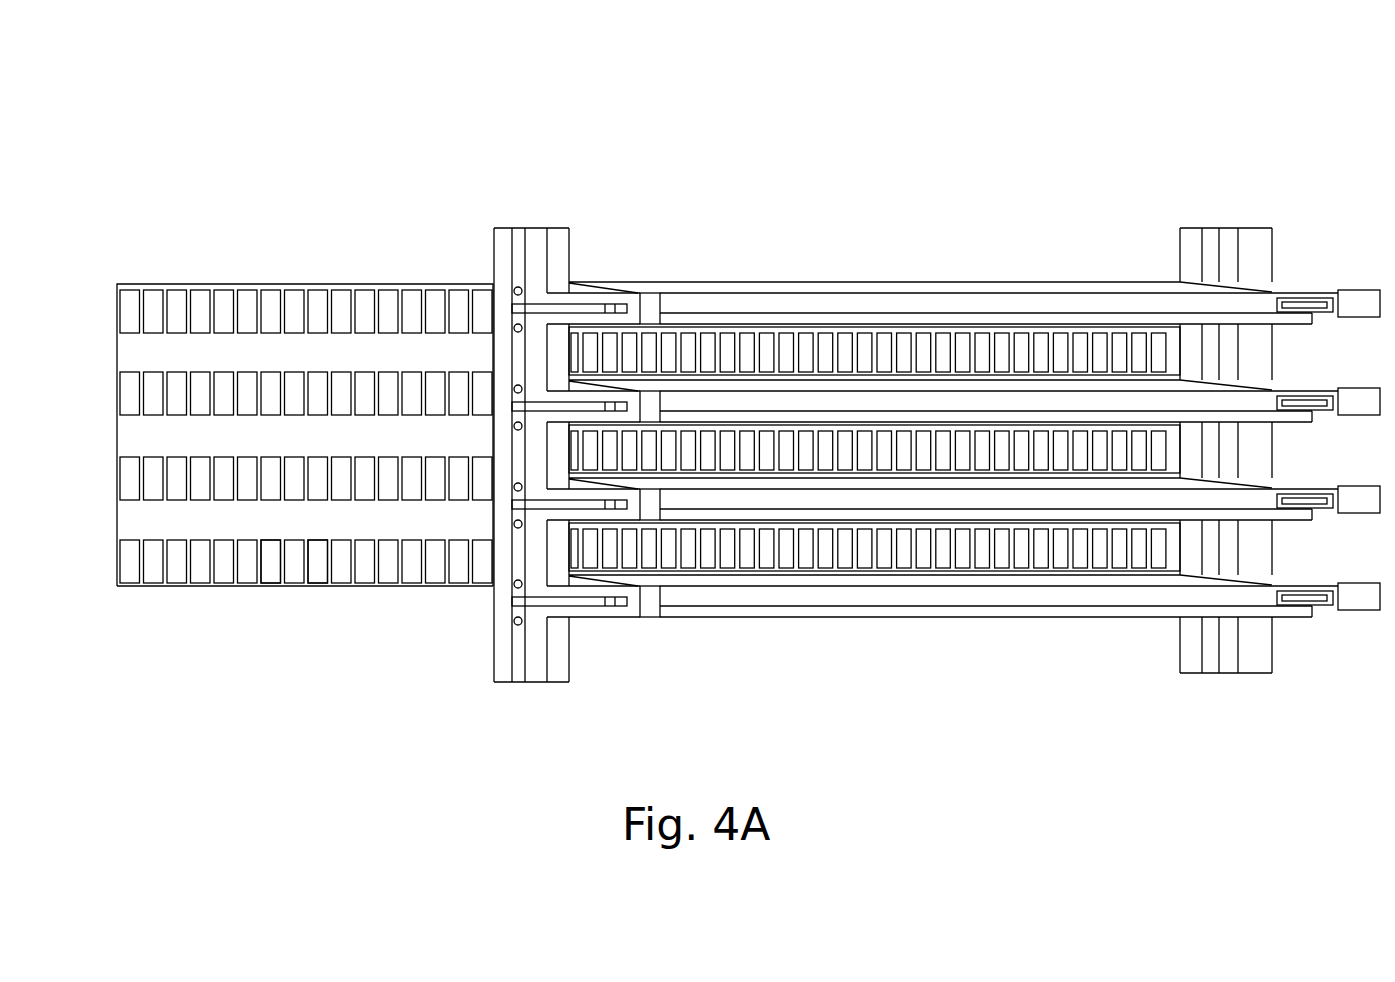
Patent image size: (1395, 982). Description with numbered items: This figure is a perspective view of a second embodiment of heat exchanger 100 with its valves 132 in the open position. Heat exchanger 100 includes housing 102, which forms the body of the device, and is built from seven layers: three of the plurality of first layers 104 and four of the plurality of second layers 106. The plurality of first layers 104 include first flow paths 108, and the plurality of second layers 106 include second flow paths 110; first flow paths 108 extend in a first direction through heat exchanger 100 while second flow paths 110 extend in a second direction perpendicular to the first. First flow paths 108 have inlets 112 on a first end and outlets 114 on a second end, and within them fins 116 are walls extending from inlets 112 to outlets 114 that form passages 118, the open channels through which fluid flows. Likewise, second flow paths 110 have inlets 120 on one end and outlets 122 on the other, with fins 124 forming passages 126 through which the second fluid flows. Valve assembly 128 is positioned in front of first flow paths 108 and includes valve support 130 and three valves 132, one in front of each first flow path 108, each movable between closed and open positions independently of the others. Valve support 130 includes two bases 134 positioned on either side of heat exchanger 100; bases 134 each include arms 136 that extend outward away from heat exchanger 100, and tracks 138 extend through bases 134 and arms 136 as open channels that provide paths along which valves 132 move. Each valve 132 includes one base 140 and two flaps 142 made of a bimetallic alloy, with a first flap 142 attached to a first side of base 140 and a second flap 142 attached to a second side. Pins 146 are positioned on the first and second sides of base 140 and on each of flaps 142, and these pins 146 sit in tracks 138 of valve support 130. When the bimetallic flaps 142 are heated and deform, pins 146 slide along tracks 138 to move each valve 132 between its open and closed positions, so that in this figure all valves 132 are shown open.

The heat exchanger 100 is at (283, 128).
The housing 102 is at (605, 288).
The plurality of first layers 104 is at (224, 520).
The plurality of second layers 106 is at (388, 555).
The first flow paths 108 is at (1300, 349).
The second flow paths 110 is at (108, 560).
The inlets 112 is at (936, 318).
The outlets 114 is at (108, 357).
The fins 116 is at (818, 340).
The passages 118 is at (770, 340).
The inlets 120 is at (183, 597).
The outlets 122 is at (1300, 548).
The fins 124 is at (262, 566).
The passages 126 is at (318, 563).
The valve assembly 128 is at (1067, 645).
The valve support 130 is at (557, 657).
The valves 132 is at (752, 598).
The bases 134 is at (500, 640).
The arms 136 is at (660, 592).
The tracks 138 is at (517, 643).
The bases 140 is at (855, 595).
The flaps 142 is at (926, 575).
The pins 146 is at (514, 586).